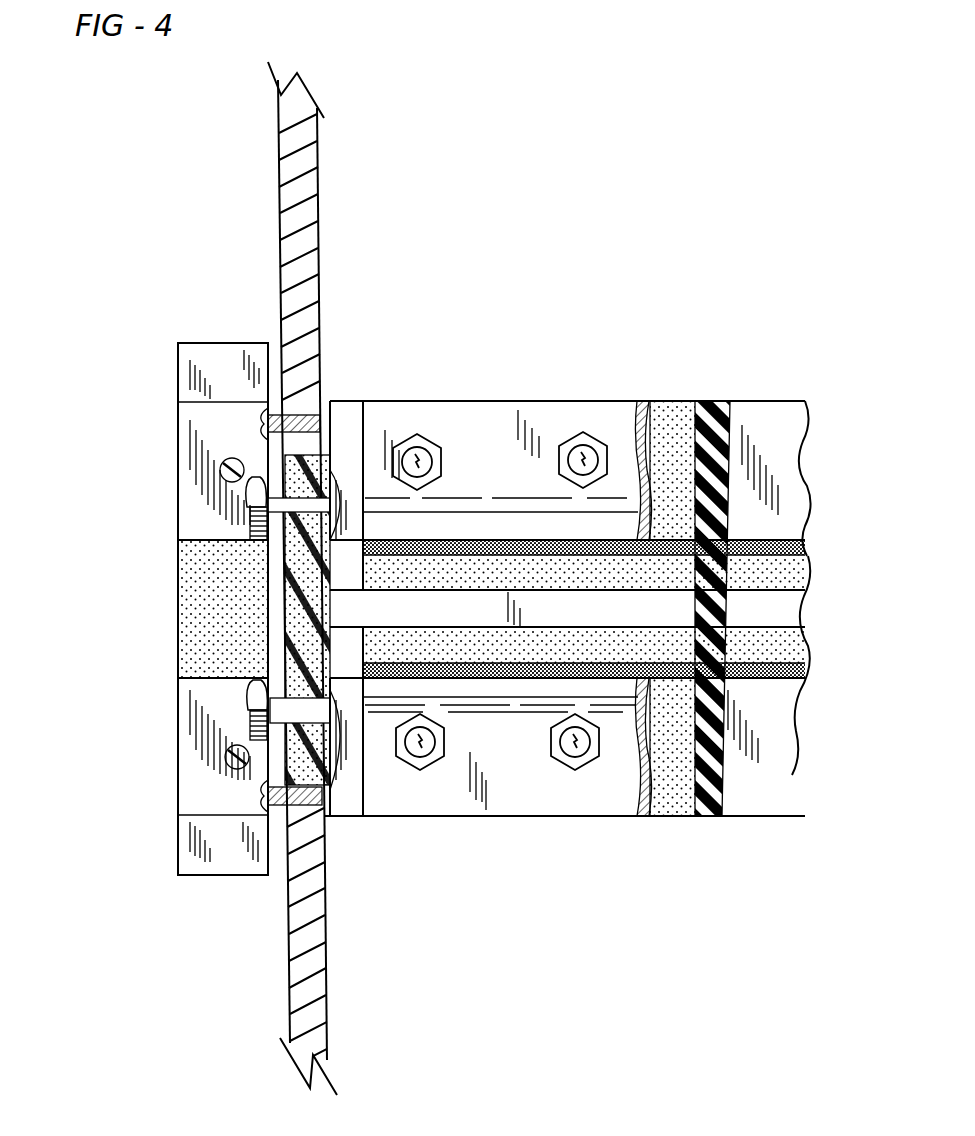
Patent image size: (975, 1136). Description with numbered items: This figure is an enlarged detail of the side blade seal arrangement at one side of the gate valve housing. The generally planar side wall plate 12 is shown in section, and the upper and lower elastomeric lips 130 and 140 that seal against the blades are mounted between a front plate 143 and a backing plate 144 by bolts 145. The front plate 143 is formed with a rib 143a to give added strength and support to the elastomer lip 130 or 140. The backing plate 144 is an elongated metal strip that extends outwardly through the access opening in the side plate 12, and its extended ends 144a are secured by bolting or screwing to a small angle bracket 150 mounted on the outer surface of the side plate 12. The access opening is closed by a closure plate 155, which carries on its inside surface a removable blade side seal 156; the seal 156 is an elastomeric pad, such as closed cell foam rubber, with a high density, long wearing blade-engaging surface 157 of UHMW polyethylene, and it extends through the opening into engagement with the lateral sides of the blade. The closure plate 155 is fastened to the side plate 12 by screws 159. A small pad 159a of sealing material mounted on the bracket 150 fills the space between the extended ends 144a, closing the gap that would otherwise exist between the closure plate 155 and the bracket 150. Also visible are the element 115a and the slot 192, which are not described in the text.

The first side wall plate 12 is at (290, 1018).
The bolt 115a is at (258, 420).
The elastomeric lip 130 is at (785, 538).
The elastomeric lip 140 is at (745, 648).
The front plate 143 is at (608, 418).
The rib 143a is at (622, 530).
The backing plate 144 is at (745, 812).
The extended ends 144a is at (195, 517).
The bolts 145 is at (420, 436).
The angle bracket 150 is at (235, 868).
The closure plate 155 is at (275, 623).
The blade side seal 156 is at (245, 683).
The blade-engaging surface 157 is at (277, 572).
The screws 159 is at (265, 804).
The pad of sealing material 159a is at (195, 665).
The slot 192 is at (768, 613).